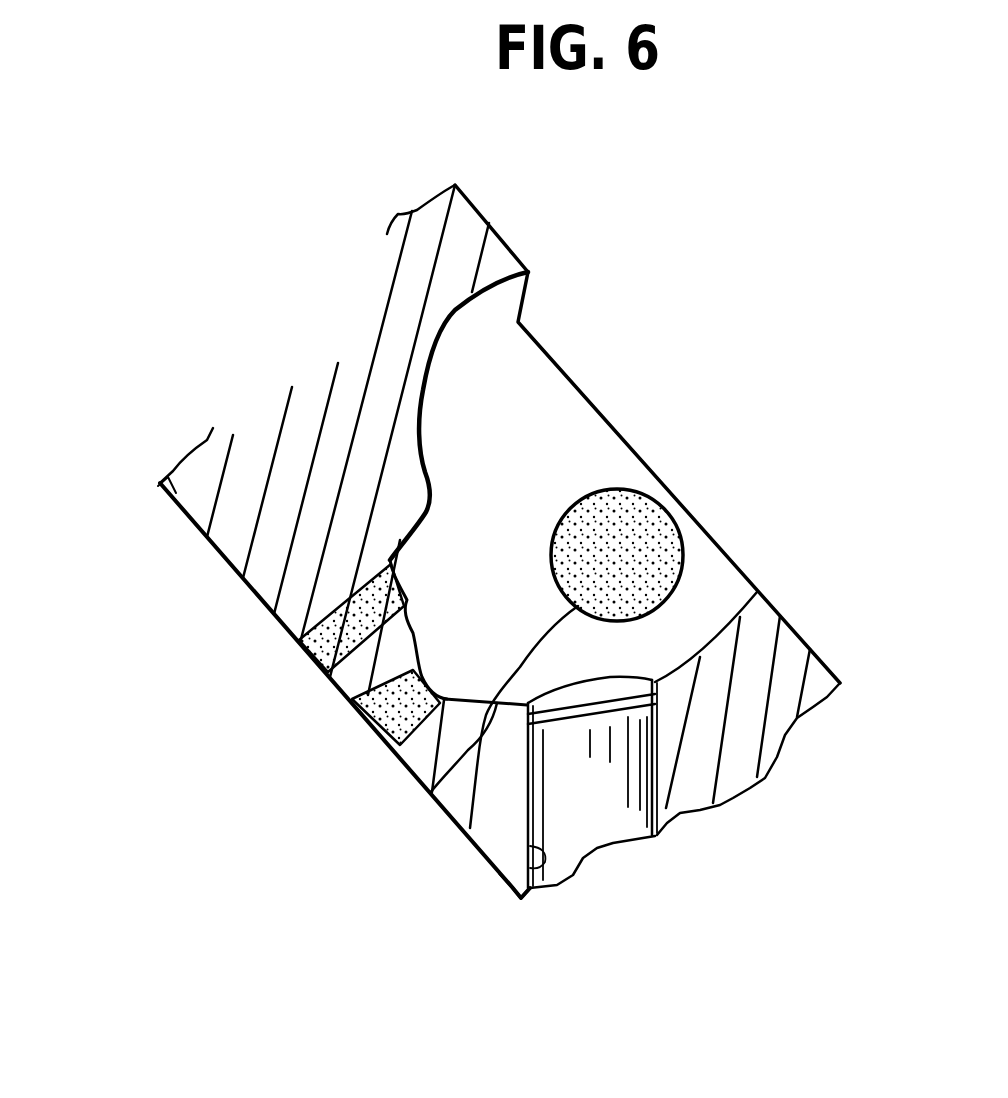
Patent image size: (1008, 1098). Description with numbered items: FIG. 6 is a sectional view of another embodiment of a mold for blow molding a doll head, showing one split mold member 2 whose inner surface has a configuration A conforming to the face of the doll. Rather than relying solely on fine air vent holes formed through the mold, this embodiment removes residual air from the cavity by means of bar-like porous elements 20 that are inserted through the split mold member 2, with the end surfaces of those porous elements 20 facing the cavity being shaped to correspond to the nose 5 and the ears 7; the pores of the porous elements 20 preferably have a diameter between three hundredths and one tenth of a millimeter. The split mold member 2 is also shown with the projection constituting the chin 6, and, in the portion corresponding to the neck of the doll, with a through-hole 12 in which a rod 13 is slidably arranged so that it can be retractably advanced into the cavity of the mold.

The split mold member 2 is at (489, 223).
The nose 5 is at (388, 560).
The chin 6 is at (447, 698).
The ears 7 is at (677, 587).
The through-hole 12 is at (512, 886).
The rod 13 is at (657, 836).
The bar-like porous elements 20 is at (331, 626).
The configuration A is at (430, 367).